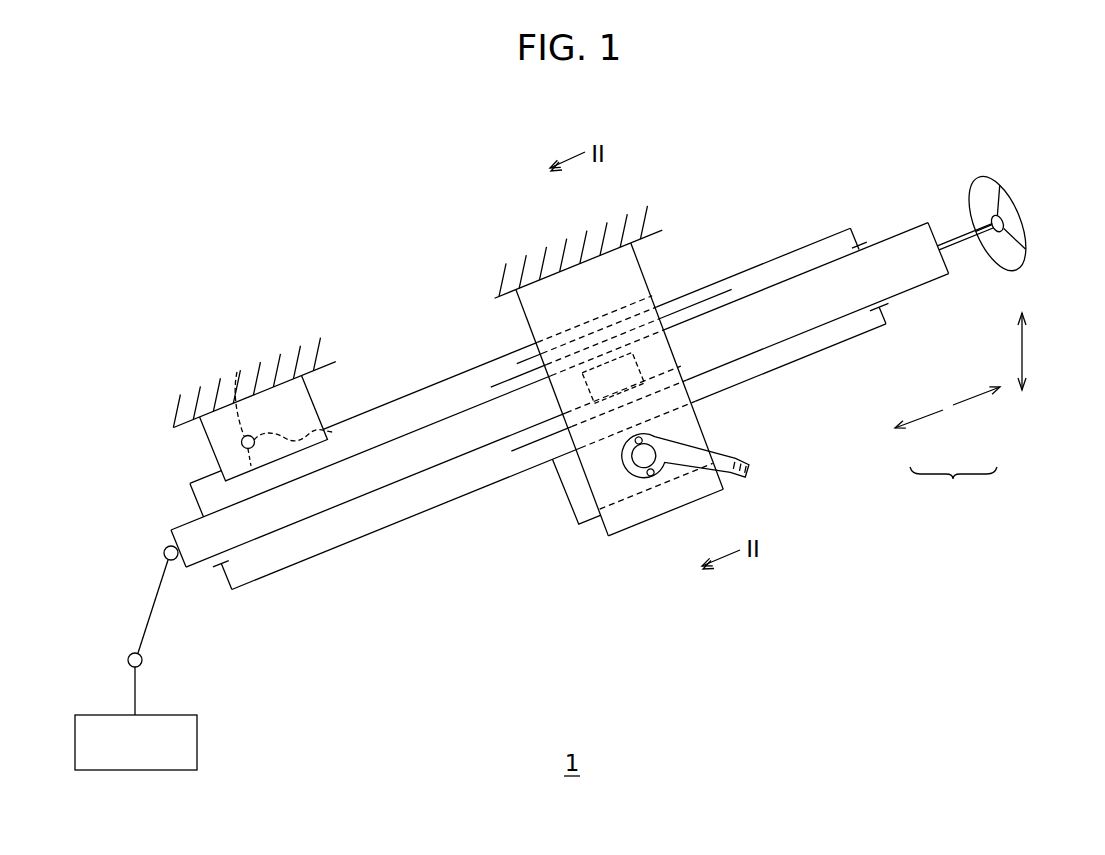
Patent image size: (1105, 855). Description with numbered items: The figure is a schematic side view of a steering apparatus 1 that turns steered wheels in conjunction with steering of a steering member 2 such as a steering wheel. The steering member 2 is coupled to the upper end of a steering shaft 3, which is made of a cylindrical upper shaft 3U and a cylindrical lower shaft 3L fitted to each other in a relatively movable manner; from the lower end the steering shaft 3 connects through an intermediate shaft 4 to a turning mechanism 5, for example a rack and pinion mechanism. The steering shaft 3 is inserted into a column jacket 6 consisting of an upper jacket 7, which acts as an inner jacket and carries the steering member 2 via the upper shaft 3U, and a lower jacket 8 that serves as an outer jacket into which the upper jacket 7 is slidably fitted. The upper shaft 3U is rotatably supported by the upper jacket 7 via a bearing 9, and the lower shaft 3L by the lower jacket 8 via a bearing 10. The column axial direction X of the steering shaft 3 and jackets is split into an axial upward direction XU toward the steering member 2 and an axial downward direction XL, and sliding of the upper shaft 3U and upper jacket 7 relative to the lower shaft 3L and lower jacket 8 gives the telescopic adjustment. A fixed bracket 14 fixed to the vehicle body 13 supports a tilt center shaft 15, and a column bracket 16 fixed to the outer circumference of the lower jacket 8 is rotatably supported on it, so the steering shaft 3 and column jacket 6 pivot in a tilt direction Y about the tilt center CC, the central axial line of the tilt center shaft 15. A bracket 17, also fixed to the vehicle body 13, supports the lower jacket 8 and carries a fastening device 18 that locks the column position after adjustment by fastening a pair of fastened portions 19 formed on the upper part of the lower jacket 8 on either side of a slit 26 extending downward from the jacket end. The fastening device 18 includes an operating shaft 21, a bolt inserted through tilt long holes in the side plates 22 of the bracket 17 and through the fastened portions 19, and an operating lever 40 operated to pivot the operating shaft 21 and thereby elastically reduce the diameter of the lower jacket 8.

The steering apparatus 1 is at (1022, 162).
The steering member 2 is at (985, 177).
The steering shaft 3 is at (903, 228).
The upper shaft 3U is at (925, 287).
The lower shaft 3L is at (304, 522).
The intermediate shaft 4 is at (152, 612).
The turning mechanism 5 is at (205, 745).
The column jacket 6 is at (432, 386).
The upper jacket 7 is at (847, 339).
The lower jacket 8 is at (372, 537).
The bearing 9 is at (858, 232).
The bearing 10 is at (200, 511).
The vehicle body 13 is at (291, 356).
The fixed bracket 14 is at (300, 394).
The tilt center shaft 15 is at (233, 377).
The column bracket 16 is at (248, 460).
The tilt center CC is at (241, 442).
The bracket 17 is at (647, 275).
The fastening device 18 is at (679, 434).
The fastened portions 19 is at (720, 440).
The operating shaft 21 is at (643, 466).
The side plates 22 is at (540, 316).
The slit 26 is at (580, 493).
The operating lever 40 is at (750, 474).
The column axial direction X is at (953, 486).
The axial downward direction XL is at (931, 416).
The axial upward direction XU is at (975, 399).
The tilt direction Y is at (1024, 350).